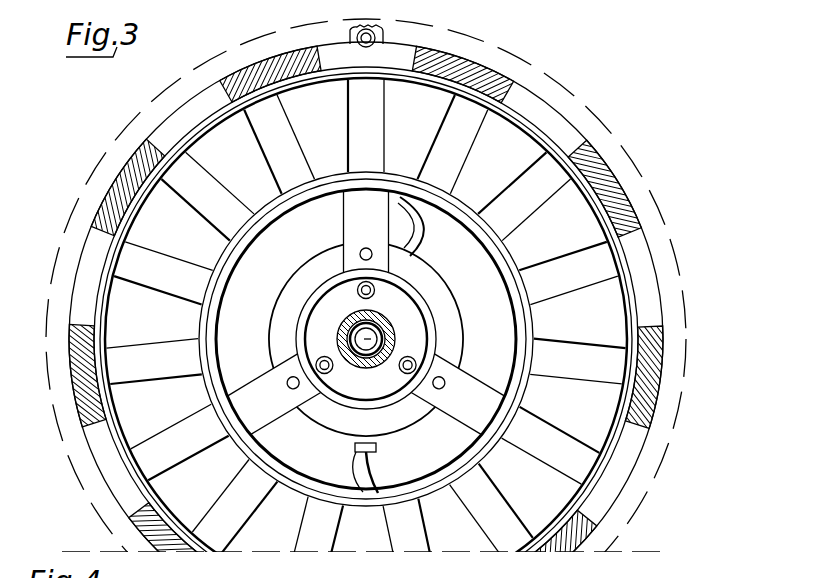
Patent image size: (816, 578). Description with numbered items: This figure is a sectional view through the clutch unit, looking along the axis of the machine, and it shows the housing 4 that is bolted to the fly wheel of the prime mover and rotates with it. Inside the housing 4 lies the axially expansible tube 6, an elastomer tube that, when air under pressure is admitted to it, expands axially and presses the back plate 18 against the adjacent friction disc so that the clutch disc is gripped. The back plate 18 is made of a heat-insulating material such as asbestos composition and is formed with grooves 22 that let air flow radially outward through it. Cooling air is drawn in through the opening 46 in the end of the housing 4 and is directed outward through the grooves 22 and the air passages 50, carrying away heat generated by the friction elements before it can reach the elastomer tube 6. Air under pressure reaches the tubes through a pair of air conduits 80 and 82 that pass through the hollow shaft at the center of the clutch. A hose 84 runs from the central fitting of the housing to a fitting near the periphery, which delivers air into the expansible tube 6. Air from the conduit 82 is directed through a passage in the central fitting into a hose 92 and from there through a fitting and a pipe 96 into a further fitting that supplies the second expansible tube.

The housing 4 is at (473, 63).
The axially expansible tube 6 is at (640, 197).
The back plate 18 is at (617, 302).
The grooves 22 is at (608, 266).
The opening 46 is at (495, 328).
The air passages 50 is at (528, 100).
The air conduit 80 is at (383, 366).
The air conduit 82 is at (379, 337).
The hose 84 is at (364, 470).
The hose 92 is at (421, 236).
The pipe 96 is at (383, 36).